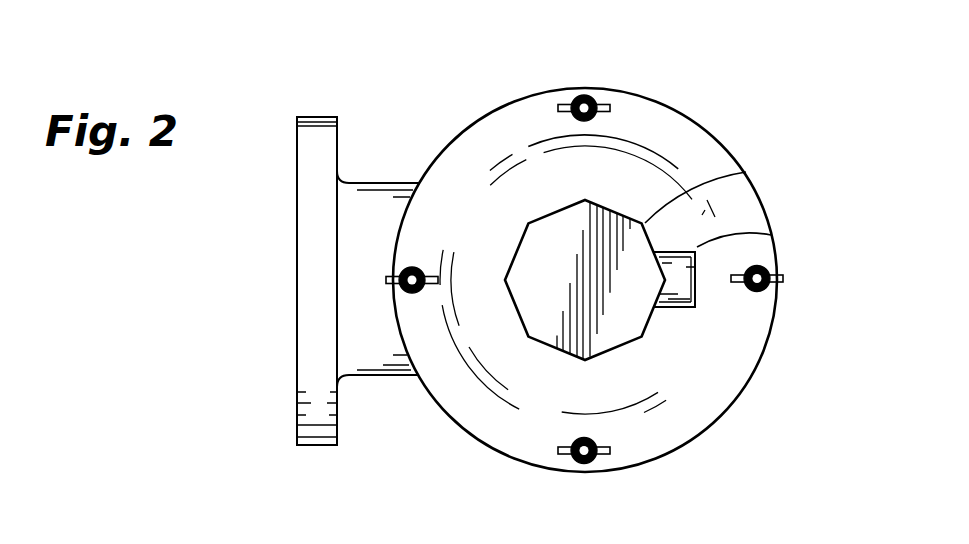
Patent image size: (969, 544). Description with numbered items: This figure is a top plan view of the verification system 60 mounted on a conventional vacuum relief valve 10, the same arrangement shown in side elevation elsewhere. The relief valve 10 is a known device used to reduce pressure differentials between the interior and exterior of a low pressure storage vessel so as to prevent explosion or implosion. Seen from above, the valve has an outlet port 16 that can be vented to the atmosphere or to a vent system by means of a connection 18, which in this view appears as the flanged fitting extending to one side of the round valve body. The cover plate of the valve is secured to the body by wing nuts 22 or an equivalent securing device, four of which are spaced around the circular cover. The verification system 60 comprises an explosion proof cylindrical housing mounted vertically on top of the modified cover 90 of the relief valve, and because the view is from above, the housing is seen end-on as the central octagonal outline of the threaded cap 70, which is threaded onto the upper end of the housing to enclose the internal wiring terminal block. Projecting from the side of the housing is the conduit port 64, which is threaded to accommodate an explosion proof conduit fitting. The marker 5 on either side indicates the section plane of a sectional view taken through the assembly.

The vacuum relief valve 10 is at (765, 403).
The outlet port 16 is at (298, 219).
The connection 18 is at (338, 116).
The wing nuts 22 is at (612, 105).
The verification system 60 is at (519, 245).
The conduit port 64 is at (770, 234).
The threaded cap 70 is at (746, 174).
The modified cover 90 is at (662, 133).
The section line for FIG. 5 is at (265, 277).